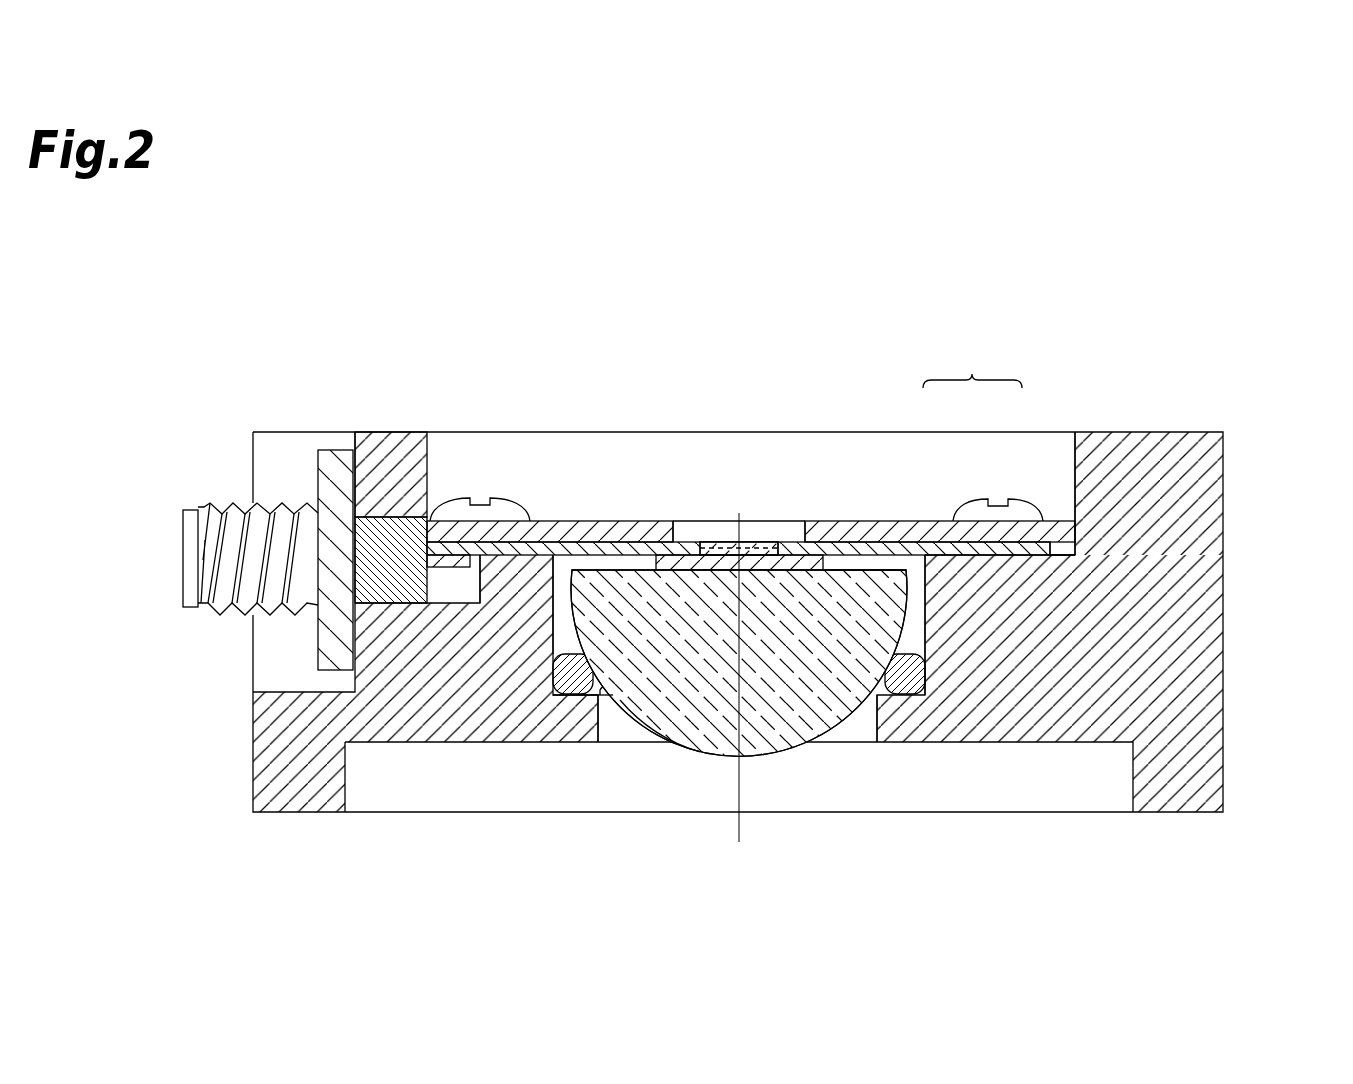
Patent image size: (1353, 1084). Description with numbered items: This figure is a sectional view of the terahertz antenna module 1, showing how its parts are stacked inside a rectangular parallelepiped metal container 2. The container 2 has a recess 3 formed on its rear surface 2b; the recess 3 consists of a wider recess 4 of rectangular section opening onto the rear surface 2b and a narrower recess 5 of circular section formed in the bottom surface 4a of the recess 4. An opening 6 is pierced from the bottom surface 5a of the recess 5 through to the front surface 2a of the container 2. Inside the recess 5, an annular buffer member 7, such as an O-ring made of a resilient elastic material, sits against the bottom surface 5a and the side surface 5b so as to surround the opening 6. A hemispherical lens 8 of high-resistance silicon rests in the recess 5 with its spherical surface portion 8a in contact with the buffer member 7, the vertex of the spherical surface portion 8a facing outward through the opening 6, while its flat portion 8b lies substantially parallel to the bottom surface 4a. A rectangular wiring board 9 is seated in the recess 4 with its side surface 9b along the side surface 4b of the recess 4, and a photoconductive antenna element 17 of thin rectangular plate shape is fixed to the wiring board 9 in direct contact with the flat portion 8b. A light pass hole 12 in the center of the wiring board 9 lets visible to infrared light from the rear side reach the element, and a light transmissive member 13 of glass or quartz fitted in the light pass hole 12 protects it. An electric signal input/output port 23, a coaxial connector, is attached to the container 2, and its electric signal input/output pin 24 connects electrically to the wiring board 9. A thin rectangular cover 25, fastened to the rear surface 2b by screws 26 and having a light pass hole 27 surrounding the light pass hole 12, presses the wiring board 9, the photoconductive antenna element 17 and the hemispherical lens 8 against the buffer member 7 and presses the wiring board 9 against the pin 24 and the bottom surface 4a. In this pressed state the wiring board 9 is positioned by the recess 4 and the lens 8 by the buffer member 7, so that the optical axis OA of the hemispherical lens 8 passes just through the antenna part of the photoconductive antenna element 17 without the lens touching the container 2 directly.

The terahertz antenna module 1 is at (1264, 381).
The container 2 is at (1205, 612).
The front surface 2a is at (1086, 748).
The rear surface 2b is at (1076, 522).
The recess 3 is at (972, 366).
The recess (second portion) 4 is at (1037, 553).
The bottom surface 4a is at (510, 572).
The side surface 4b is at (1040, 560).
The recess (first portion) 5 is at (921, 553).
The bottom surface 5a is at (609, 690).
The side surface 5b is at (560, 656).
The opening 6 is at (868, 722).
The buffer member 7 is at (898, 697).
The hemispherical lens 8 is at (735, 748).
The spherical surface portion 8a is at (650, 735).
The flat portion 8b is at (860, 568).
The wiring board 9 is at (553, 521).
The side surface 9b is at (1062, 545).
The light pass hole 12 is at (712, 542).
The light transmissive member 13 is at (750, 548).
The photoconductive antenna element 17 is at (668, 557).
The electric signal input/output port 23 is at (291, 505).
The electric signal input/output pin 24 is at (456, 555).
The cover 25 is at (890, 540).
The screws 26 is at (500, 500).
The light pass hole 27 is at (805, 535).
The optical axis OA is at (745, 822).